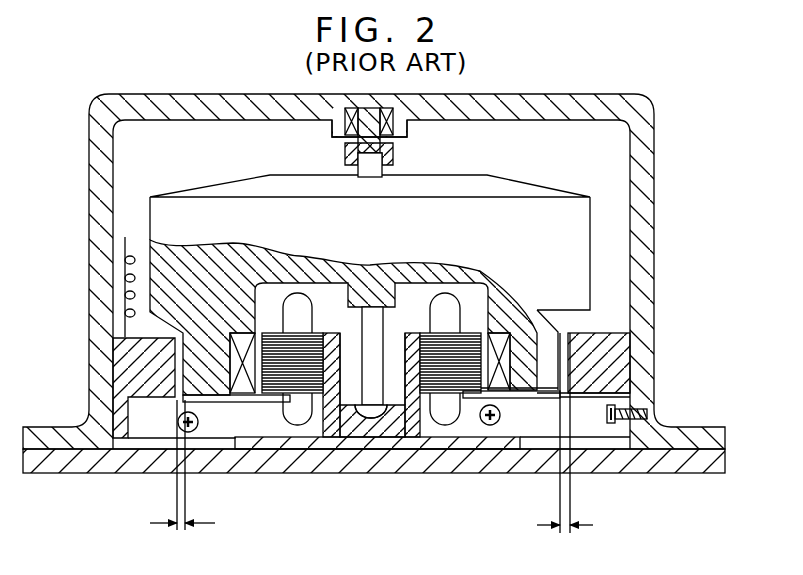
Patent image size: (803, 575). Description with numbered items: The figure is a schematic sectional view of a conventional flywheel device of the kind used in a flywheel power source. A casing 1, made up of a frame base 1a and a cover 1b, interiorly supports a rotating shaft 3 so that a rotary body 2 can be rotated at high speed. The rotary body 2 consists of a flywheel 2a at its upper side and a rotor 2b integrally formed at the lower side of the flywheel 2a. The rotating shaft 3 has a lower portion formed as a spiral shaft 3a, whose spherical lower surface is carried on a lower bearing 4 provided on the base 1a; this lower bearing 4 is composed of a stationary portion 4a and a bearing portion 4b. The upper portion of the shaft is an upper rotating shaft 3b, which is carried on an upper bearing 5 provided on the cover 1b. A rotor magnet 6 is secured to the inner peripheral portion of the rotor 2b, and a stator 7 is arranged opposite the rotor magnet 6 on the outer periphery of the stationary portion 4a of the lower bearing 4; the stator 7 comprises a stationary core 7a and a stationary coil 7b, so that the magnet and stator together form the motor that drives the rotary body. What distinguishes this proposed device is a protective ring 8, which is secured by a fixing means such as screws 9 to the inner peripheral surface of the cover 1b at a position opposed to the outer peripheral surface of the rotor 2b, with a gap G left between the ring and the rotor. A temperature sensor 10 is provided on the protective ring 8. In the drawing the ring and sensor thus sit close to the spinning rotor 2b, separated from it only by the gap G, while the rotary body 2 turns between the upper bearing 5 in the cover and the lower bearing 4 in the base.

The casing 1 is at (403, 301).
The frame base 1a is at (391, 475).
The cover 1b is at (693, 425).
The rotary body 2 is at (442, 262).
The flywheel 2a is at (540, 188).
The rotor 2b is at (551, 334).
The rotating shaft 3 is at (408, 332).
The spiral shaft 3a is at (385, 444).
The upper rotating shaft 3b is at (382, 170).
The lower bearing 4 is at (377, 444).
The stationary portion 4a is at (278, 444).
The bearing portion 4b is at (340, 444).
The upper bearing 5 is at (345, 158).
The rotor magnet 6 is at (500, 388).
The stator 7 is at (422, 444).
The stationary core 7a is at (476, 444).
The stationary coil 7b is at (450, 444).
The protective ring 8 is at (123, 365).
The screws 9 is at (190, 433).
The temperature sensor 10 is at (120, 270).
The gap G is at (371, 449).